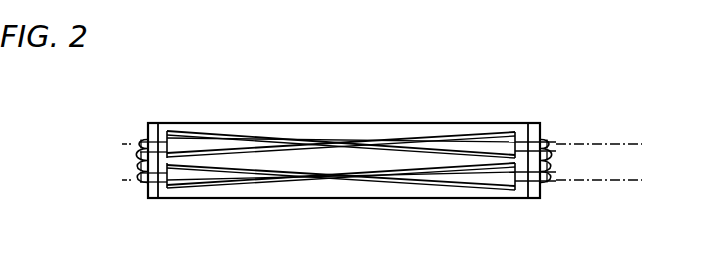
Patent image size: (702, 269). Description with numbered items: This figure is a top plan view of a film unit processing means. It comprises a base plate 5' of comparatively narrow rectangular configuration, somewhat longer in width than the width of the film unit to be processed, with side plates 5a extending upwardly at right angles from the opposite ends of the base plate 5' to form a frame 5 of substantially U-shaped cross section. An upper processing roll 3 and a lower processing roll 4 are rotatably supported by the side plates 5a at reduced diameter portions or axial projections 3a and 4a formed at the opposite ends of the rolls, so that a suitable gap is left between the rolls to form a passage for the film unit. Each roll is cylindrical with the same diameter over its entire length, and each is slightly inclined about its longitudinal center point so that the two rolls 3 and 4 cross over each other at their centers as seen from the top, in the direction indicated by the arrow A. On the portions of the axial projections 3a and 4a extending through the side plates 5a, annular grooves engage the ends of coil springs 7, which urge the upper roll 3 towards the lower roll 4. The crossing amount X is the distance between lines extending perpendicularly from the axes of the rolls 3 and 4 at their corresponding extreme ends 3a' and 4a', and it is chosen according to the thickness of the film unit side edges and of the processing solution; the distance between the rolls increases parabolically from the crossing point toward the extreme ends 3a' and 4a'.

The upper processing roll 3 is at (266, 146).
The lower processing roll 4 is at (203, 182).
The axial projection of upper roll 3a is at (338, 163).
The extreme end of axial projection 3a 3a' is at (560, 220).
The axial projection of lower roll 4a is at (303, 128).
The extreme end of axial projection 4a 4a' is at (566, 109).
The frame 5 is at (344, 132).
The base plate 5' is at (344, 222).
The side plate 5a is at (147, 192).
The coil spring 7 is at (132, 160).
The viewing direction arrow A is at (349, 92).
The crossing amount X is at (633, 144).